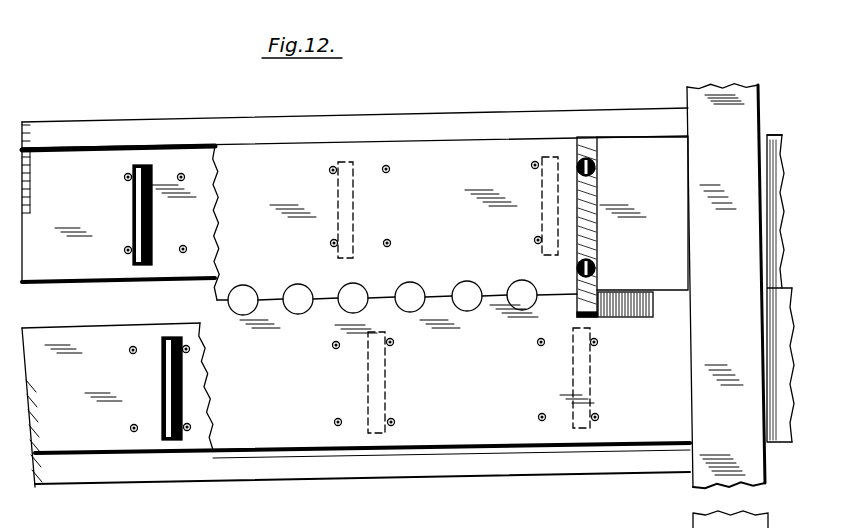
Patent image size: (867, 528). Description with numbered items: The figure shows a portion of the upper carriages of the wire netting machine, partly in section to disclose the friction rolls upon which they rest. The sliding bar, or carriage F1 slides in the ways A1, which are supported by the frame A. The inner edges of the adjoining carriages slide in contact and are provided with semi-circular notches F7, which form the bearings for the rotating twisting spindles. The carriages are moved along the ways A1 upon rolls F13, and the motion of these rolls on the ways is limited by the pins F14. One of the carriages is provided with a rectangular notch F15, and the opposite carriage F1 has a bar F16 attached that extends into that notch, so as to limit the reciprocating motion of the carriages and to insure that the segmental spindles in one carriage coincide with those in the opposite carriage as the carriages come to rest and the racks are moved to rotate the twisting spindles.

The frame A is at (740, 306).
The ways A1 is at (519, 122).
The sliding bar, or carriage F1 is at (366, 285).
The semi-circular notches F7 is at (244, 285).
The rolls F13 is at (152, 229).
The pins F14 is at (139, 163).
The rectangular notches F15 is at (653, 312).
The bars F16 is at (587, 243).